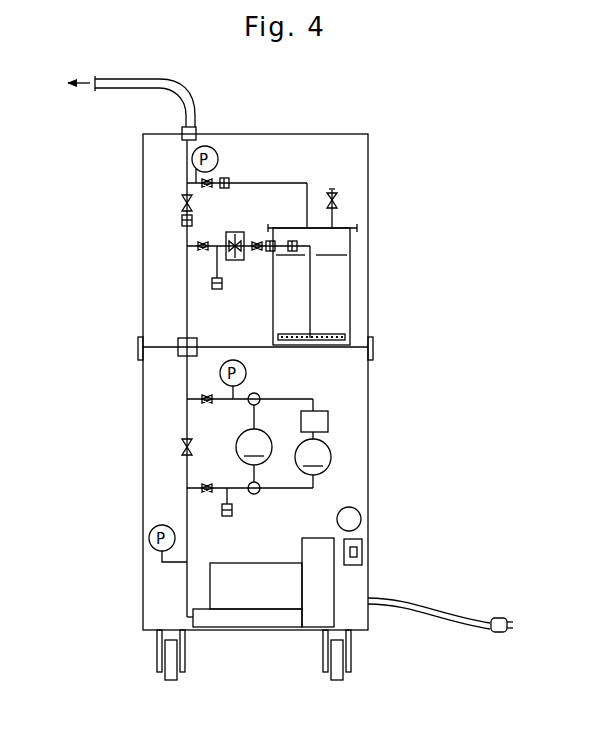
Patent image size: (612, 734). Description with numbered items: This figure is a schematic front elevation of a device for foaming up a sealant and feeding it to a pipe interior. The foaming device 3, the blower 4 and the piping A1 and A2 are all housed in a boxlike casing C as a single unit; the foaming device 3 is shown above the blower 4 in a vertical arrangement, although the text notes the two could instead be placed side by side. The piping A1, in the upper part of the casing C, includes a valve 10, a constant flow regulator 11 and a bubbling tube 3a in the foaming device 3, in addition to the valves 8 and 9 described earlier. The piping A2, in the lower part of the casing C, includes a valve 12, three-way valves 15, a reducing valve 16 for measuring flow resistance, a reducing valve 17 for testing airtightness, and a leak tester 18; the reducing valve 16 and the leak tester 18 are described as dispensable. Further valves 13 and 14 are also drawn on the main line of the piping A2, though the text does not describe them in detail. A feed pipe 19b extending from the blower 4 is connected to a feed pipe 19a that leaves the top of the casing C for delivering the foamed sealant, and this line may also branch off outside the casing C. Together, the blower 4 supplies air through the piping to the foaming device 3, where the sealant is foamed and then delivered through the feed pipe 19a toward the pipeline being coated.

The casing C is at (340, 134).
The feed pipe 19a is at (128, 79).
The valve 10 is at (215, 179).
The valve 8 is at (184, 199).
The piping A1 is at (167, 211).
The valve 9 is at (196, 248).
The constant flow regulator 11 is at (236, 232).
The foaming device 3 is at (348, 272).
The bubbling tube 3a is at (332, 335).
The valve 12 is at (201, 397).
The valve 13 is at (185, 441).
The valve 14 is at (200, 488).
The three-way valves 15 is at (258, 393).
The reducing valve 16 is at (254, 443).
The reducing valve 17 is at (313, 460).
The leak tester 18 is at (328, 418).
The piping A2 is at (172, 458).
The feed pipe 19b is at (186, 590).
The blower 4 is at (260, 610).